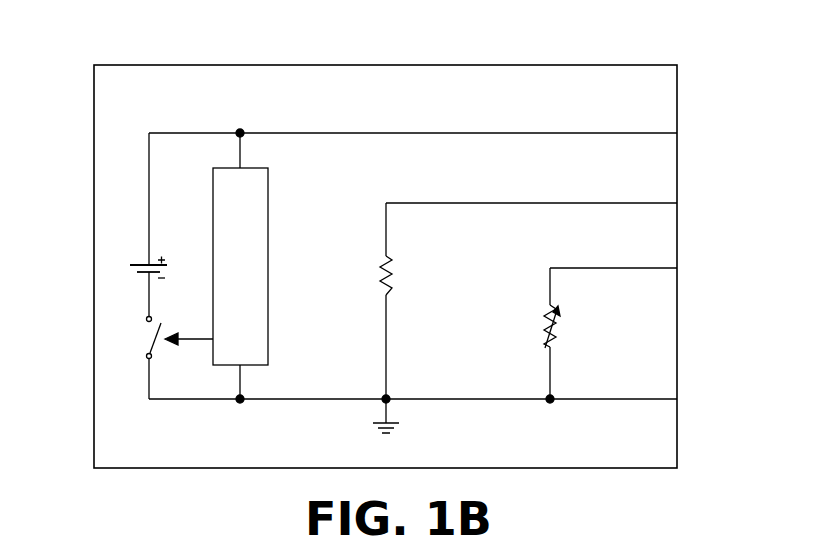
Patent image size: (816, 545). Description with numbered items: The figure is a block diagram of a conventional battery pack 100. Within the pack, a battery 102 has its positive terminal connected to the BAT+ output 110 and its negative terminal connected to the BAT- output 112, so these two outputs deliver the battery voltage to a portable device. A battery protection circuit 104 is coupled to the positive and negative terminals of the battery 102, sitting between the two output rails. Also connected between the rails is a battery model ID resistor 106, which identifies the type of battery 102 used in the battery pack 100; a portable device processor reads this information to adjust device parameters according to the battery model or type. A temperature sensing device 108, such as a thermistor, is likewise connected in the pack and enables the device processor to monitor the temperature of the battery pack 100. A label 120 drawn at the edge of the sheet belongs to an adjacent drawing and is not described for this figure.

The battery pack 100 is at (643, 58).
The battery cell with switch 102 is at (125, 268).
The protection circuit 104 is at (268, 200).
The identification resistor RR 106 is at (403, 275).
The thermistor RT 108 is at (567, 328).
The BAT+ terminal line 110 is at (495, 132).
The BAT- terminal line 112 is at (444, 400).
The adjacent figure reference 120 is at (618, 544).